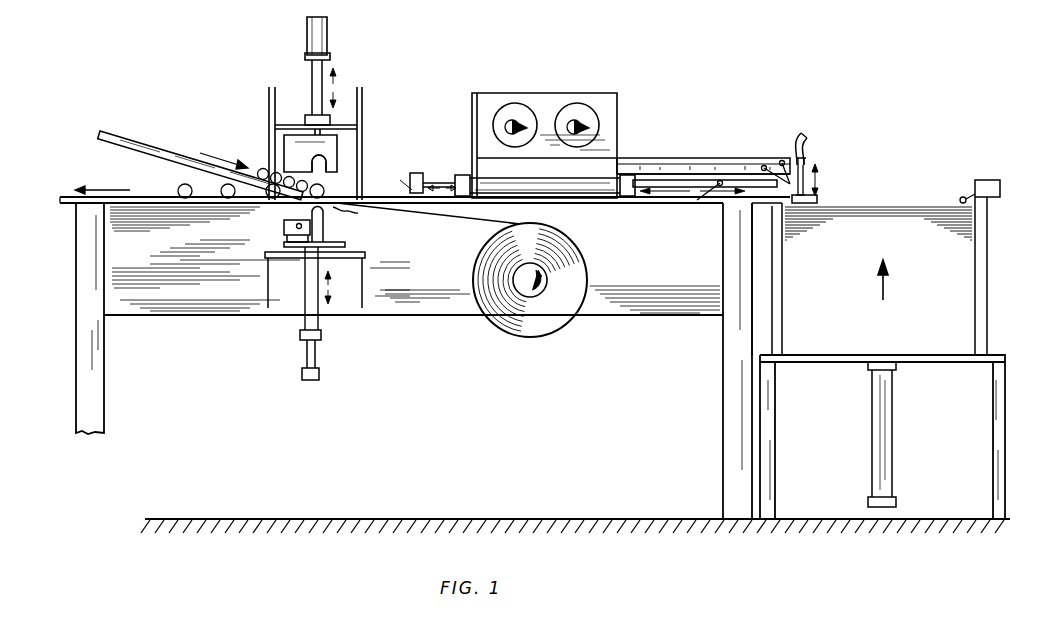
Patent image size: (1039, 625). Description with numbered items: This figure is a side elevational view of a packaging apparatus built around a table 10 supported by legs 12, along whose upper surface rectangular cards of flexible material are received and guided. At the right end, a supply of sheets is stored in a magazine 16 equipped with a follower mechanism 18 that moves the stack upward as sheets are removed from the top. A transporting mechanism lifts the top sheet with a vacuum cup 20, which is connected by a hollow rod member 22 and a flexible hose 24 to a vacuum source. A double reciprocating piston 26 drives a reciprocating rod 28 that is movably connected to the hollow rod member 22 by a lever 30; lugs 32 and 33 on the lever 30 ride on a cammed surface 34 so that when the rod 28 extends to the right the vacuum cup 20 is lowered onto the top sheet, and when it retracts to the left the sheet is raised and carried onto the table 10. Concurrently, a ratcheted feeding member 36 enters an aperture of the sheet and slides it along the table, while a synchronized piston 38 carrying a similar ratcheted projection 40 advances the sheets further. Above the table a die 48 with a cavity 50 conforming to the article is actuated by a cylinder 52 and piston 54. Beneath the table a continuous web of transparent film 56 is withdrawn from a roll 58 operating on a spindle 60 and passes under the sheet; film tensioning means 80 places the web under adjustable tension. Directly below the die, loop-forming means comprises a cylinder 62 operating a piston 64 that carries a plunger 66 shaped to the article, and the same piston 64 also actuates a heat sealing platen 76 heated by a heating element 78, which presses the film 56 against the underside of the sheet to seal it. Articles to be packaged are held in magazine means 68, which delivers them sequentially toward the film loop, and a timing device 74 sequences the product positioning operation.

The table 10 is at (145, 197).
The legs 12 is at (76, 322).
The magazine 16 is at (777, 288).
The follower mechanism 18 is at (866, 437).
The vacuum cup 20 is at (818, 197).
The hollow rod member 22 is at (806, 176).
The flexible hose 24 is at (803, 147).
The double reciprocating piston 26 is at (600, 178).
The reciprocating rod 28 is at (640, 181).
The lever 30 is at (797, 158).
The lug 32 is at (780, 160).
The lug 33 is at (706, 157).
The cammed surface 34 is at (688, 157).
The ratcheted feeding member 36 is at (726, 190).
The piston 38 is at (435, 183).
The ratcheted projection 40 is at (400, 170).
The die 48 is at (284, 146).
The cavity 50 is at (322, 163).
The cylinder 52 is at (328, 36).
The piston 54 is at (312, 70).
The transparent film 56 is at (436, 212).
The roll 58 is at (490, 322).
The spindle 60 is at (535, 282).
The cylinder 62 is at (304, 322).
The piston 64 is at (318, 353).
The plunger 66 is at (324, 233).
The magazine means 68 is at (138, 135).
The timing device 74 is at (553, 100).
The heat sealing platen 76 is at (284, 224).
The heating element 78 is at (292, 238).
The film tensioning means 80 is at (350, 212).